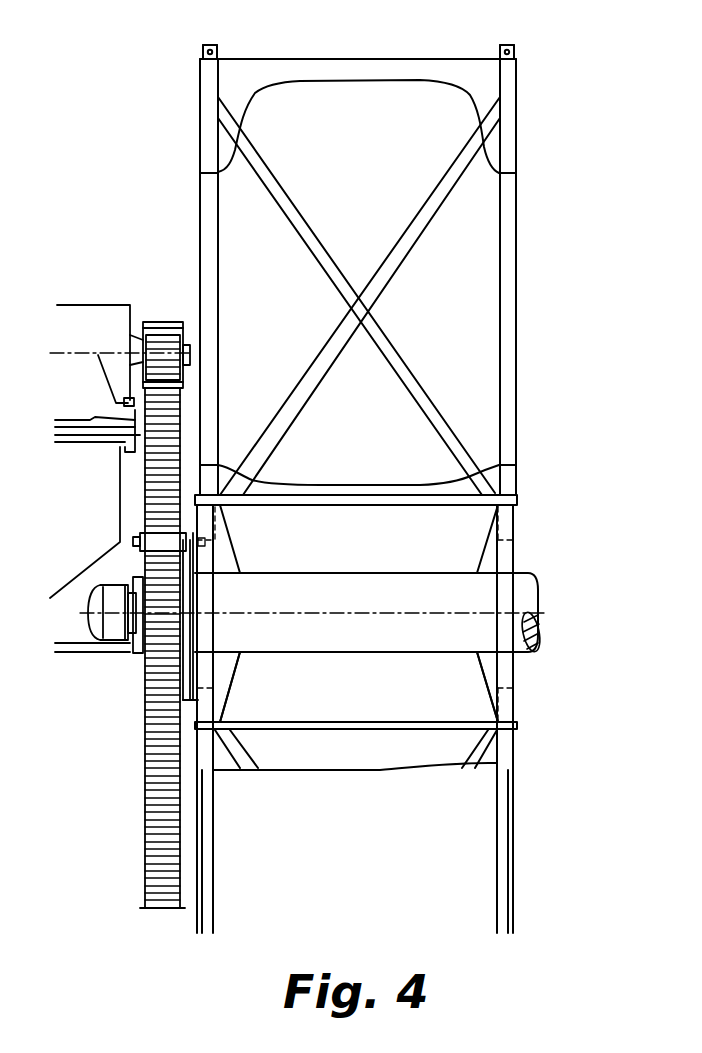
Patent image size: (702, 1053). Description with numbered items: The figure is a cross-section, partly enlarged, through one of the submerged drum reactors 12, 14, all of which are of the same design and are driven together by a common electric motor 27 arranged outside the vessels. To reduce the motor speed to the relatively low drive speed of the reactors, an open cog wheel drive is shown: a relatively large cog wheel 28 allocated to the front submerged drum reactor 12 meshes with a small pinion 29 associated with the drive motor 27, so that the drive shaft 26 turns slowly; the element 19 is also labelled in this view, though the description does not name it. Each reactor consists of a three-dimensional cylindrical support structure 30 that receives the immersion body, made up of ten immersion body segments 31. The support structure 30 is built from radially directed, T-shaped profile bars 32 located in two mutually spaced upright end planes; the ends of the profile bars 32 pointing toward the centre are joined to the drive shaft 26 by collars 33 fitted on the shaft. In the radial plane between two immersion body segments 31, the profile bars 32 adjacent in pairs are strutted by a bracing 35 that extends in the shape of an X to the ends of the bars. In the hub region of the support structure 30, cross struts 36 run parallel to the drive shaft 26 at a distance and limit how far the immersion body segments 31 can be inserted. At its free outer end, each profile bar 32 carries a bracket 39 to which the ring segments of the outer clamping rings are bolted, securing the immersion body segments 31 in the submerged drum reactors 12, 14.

The submerged drum reactor 12 is at (540, 510).
The submerged drum reactor 14 is at (430, 619).
The shaft 19 is at (480, 610).
The drive shaft 26 is at (490, 630).
The electric motor 27 is at (78, 327).
The cog wheel 28 is at (160, 840).
The pinion 29 is at (163, 323).
The support structure 30 is at (176, 153).
The immersion body segment 31 is at (287, 72).
The profile bar 32 is at (208, 235).
The collar 33 is at (190, 680).
The bracing 35 is at (287, 412).
The cross strut 36 is at (445, 723).
The bracket 39 is at (203, 46).